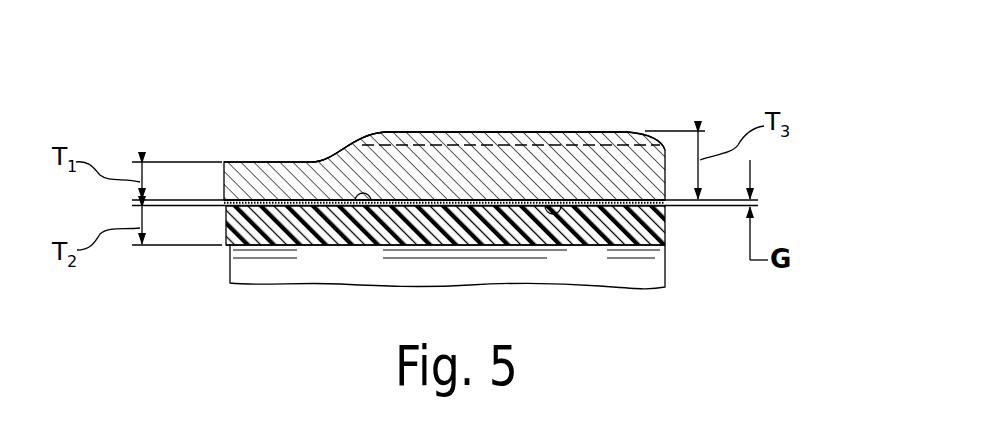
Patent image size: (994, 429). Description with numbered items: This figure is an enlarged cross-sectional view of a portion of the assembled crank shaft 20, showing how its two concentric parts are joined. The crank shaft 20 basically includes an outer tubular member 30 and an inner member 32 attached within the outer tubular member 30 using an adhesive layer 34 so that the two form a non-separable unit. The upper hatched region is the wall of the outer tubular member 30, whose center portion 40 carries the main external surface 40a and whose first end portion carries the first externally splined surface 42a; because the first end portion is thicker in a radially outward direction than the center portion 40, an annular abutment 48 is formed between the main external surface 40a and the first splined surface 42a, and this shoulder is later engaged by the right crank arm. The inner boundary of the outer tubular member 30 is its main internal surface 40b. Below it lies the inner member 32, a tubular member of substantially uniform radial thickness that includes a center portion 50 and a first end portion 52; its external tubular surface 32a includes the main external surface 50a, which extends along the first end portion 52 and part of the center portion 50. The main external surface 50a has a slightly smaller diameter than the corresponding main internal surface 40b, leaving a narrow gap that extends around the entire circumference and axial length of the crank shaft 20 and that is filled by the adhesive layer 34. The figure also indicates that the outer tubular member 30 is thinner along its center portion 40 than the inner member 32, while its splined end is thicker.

The crank shaft 20 is at (631, 68).
The outer tubular member 30 is at (645, 118).
The inner member 32 is at (676, 250).
The external tubular surface 32a is at (318, 246).
The adhesive layer 34 is at (307, 199).
The center portion 40 is at (228, 158).
The main external surface 40a is at (257, 161).
The main internal surface 40b is at (556, 205).
The first externally splined surface 42a is at (516, 128).
The annular abutment 48 is at (343, 151).
The center portion 50 is at (224, 224).
The main external surface 50a is at (370, 207).
The first end portion 52 is at (594, 250).